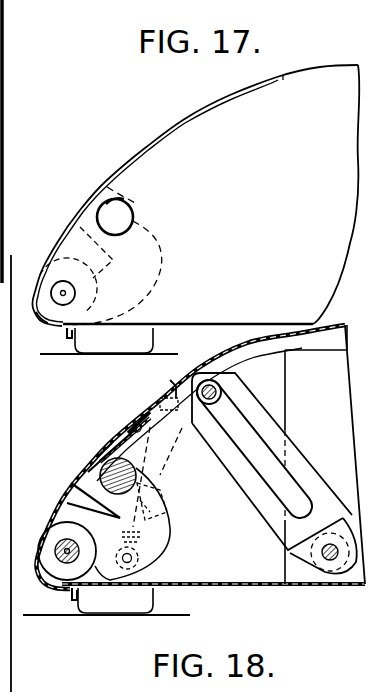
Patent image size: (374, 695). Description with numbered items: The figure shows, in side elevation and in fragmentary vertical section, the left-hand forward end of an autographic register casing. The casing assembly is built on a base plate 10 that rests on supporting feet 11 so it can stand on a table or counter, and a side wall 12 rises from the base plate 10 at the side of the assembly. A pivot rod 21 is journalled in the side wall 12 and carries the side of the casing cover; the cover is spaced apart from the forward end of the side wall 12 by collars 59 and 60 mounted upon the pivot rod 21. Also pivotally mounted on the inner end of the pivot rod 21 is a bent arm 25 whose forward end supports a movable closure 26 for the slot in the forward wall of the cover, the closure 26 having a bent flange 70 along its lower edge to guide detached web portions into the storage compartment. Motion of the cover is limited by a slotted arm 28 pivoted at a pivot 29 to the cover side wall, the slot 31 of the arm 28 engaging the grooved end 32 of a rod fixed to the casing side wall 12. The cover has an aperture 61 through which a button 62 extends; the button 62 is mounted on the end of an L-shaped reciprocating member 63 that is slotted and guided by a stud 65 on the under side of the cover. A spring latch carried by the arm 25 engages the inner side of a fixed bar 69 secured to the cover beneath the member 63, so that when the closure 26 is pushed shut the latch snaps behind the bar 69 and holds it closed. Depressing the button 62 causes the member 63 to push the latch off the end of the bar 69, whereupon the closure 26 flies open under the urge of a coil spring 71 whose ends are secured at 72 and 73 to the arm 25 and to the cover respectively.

In FIG. 17, the base plate 10 is at (118, 341).
In FIG. 18, the base plate 10 is at (3, 412).
In FIG. 17, the supporting feet 11 is at (136, 346).
In FIG. 18, the supporting feet 11 is at (148, 600).
In FIG. 17, the side wall 12 is at (195, 201).
In FIG. 18, the side wall 12 is at (200, 457).
In FIG. 17, the pivot rod 21 is at (62, 297).
In FIG. 18, the pivot rod 21 is at (60, 560).
In FIG. 17, the bent arm 25 is at (162, 243).
In FIG. 18, the bent arm 25 is at (163, 544).
In FIG. 18, the movable closure 26 is at (97, 459).
In FIG. 18, the slotted arm 28 is at (299, 468).
In FIG. 18, the pivot 29 is at (216, 389).
In FIG. 18, the slot 31 is at (248, 429).
In FIG. 18, the grooved end 32 is at (332, 545).
In FIG. 17, the collar 59 is at (44, 312).
In FIG. 18, the collar 59 is at (58, 587).
In FIG. 17, the collar 60 is at (92, 287).
In FIG. 18, the collar 60 is at (88, 546).
In FIG. 17, the aperture 61 is at (123, 199).
In FIG. 17, the button 62 is at (123, 216).
In FIG. 18, the button 62 is at (138, 472).
In FIG. 18, the L-shaped reciprocating member 63 is at (138, 421).
In FIG. 18, the stud 65 is at (118, 457).
In FIG. 18, the fixed bar 69 is at (103, 450).
In FIG. 18, the bent flange 70 is at (75, 492).
In FIG. 18, the coil spring 71 is at (160, 408).
In FIG. 18, the spring end securing point 72 is at (140, 559).
In FIG. 18, the spring end securing point 73 is at (173, 392).